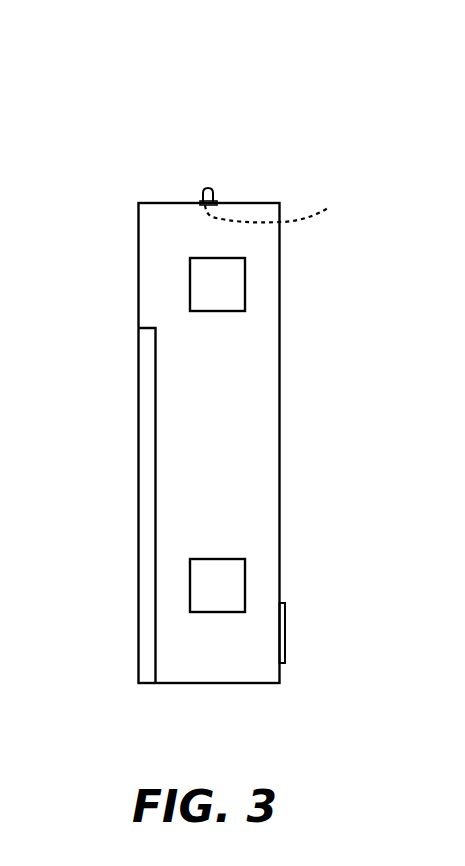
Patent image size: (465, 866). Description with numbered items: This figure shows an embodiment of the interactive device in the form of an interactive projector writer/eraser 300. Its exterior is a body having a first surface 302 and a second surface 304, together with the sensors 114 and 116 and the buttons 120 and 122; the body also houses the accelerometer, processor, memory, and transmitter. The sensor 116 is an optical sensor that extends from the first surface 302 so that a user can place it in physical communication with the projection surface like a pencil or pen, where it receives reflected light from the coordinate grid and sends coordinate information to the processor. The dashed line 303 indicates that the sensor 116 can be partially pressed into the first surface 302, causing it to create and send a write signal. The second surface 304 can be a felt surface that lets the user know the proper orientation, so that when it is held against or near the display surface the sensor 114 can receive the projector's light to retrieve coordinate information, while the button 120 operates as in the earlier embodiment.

The interactive projector writer/eraser 300 is at (175, 137).
The first surface 302 is at (155, 260).
The second surface 304 is at (148, 418).
The sensor 116 is at (213, 190).
The dashed line 303 is at (287, 207).
The button 122 is at (245, 276).
The button 120 is at (245, 576).
The sensor 114 is at (285, 630).